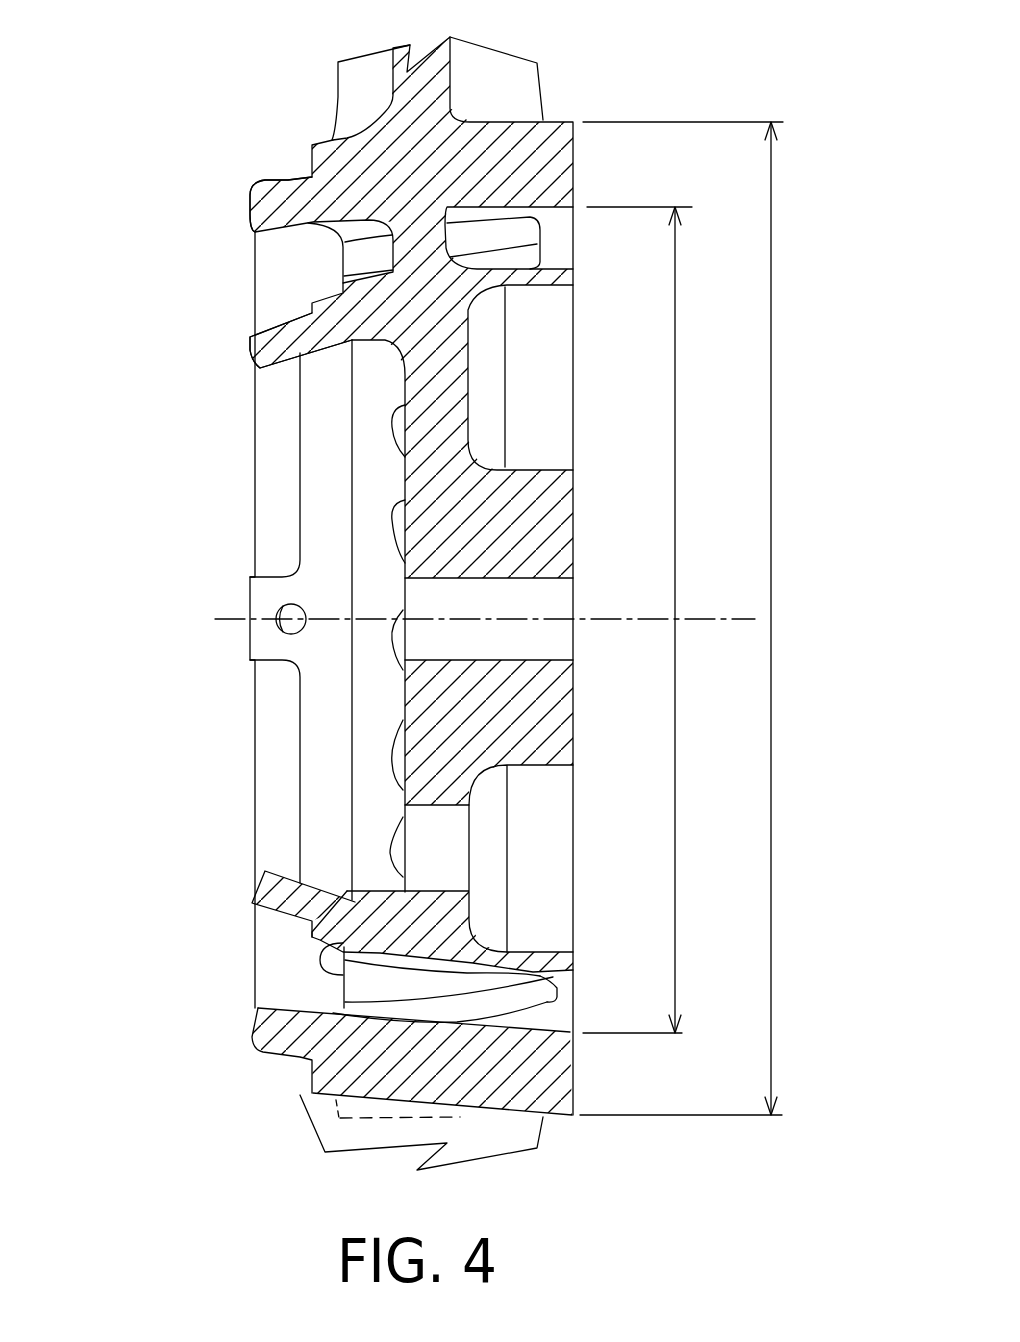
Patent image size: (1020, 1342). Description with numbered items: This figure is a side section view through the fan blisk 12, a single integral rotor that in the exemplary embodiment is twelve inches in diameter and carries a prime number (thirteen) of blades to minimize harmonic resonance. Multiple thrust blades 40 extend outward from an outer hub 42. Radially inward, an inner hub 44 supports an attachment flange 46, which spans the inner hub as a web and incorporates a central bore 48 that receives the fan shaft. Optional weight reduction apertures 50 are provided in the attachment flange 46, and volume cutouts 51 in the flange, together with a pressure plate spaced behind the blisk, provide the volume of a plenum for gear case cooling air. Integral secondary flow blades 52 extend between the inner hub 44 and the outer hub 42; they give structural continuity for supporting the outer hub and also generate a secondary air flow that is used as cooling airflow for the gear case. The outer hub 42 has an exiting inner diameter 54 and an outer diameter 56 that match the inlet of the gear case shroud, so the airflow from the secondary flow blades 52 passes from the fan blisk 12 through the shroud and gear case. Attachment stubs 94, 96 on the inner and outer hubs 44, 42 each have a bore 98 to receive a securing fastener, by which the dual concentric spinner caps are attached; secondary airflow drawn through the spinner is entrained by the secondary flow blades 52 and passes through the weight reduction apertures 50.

The fan blisk 12 is at (250, 95).
The thrust blades 40 is at (500, 90).
The outer hub 42 is at (573, 160).
The inner hub 44 is at (398, 926).
The attachment flange 46 is at (373, 795).
The central bore 48 is at (553, 597).
The weight reduction apertures 50 is at (400, 641).
The volume cutouts 51 is at (529, 846).
The integral secondary flow blades 52 is at (385, 985).
The exiting inner diameter 54 is at (678, 405).
The outer diameter 56 is at (773, 487).
The attachment stub 94 is at (255, 360).
The attachment stub 96 is at (255, 205).
The bore 98 is at (295, 893).